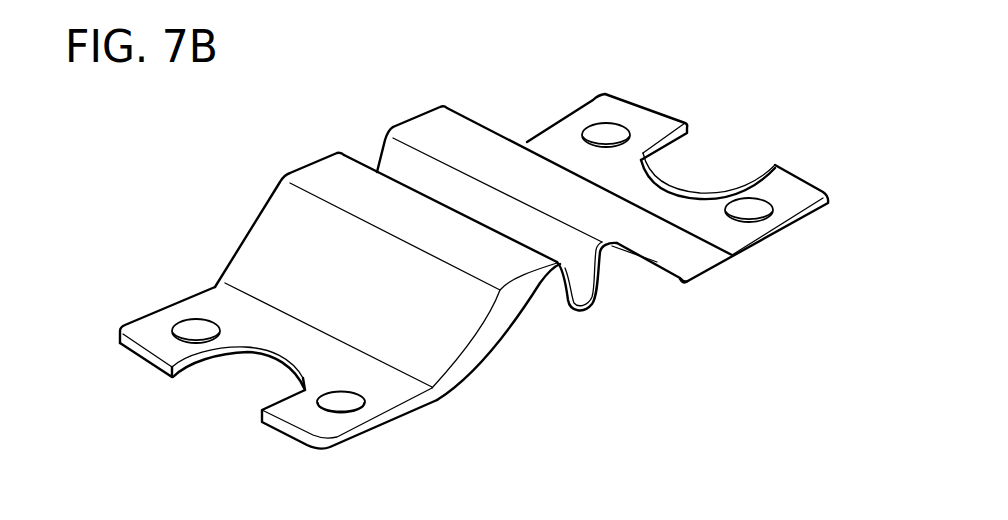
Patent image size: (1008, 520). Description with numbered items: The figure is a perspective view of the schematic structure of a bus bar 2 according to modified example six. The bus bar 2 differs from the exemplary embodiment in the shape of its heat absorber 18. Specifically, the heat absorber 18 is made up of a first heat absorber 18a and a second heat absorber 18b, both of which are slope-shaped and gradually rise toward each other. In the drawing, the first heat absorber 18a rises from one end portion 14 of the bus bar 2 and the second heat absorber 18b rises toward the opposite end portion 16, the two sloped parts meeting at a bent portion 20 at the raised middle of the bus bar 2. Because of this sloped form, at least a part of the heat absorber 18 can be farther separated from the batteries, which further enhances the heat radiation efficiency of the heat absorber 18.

The bus bar 2 is at (545, 510).
The first connection portion 14 is at (137, 320).
The second connection portion 16 is at (623, 97).
The heat absorber 18 is at (516, 276).
The first heat absorber 18a is at (485, 343).
The second heat absorber 18b is at (679, 264).
The bent portion 20 is at (588, 310).